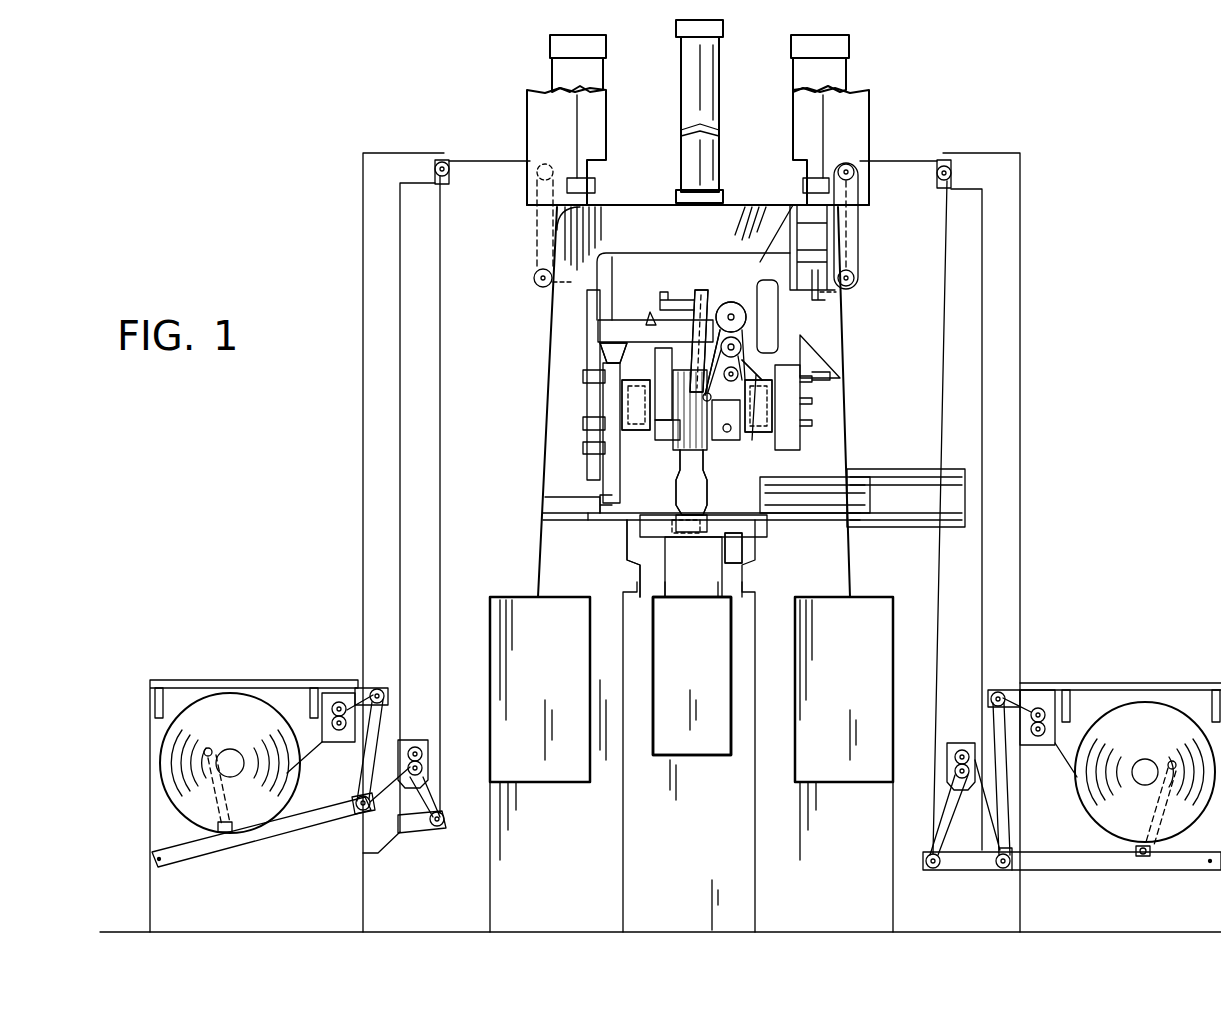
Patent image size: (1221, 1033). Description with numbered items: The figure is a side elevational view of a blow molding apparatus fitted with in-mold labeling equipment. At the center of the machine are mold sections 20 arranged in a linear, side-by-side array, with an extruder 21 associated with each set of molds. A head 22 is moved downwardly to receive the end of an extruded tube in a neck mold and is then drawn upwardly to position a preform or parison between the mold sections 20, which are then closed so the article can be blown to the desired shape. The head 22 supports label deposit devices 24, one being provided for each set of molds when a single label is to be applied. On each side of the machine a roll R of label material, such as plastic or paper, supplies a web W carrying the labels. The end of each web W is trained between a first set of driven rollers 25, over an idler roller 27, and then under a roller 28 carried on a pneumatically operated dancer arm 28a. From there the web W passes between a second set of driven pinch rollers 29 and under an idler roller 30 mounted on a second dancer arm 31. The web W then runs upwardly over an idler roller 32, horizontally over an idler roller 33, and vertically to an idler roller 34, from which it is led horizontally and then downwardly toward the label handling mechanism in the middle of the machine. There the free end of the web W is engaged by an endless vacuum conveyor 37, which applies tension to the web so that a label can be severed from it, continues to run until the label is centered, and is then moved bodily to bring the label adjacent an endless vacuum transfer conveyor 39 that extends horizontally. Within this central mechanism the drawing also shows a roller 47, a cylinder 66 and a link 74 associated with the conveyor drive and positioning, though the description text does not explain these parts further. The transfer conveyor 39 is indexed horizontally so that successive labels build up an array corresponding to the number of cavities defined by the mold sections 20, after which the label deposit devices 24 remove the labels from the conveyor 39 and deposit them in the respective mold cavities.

The mold sections 20 is at (640, 498).
The extruder 21 is at (710, 745).
The head 22 is at (675, 452).
The label deposit devices 24 is at (640, 340).
The first set of driven rollers 25 is at (335, 703).
The idler roller 27 is at (380, 690).
The roller 28 is at (358, 797).
The dancer arm 28a is at (292, 822).
The second set of driven pinch rollers 29 is at (422, 765).
The idler roller 30 is at (440, 828).
The dancer arm 31 is at (418, 831).
The idler roller 32 is at (443, 160).
The idler roller 33 is at (548, 165).
The idler roller 34 is at (540, 287).
The endless vacuum conveyor 37 is at (800, 362).
The endless vacuum transfer conveyor 39 is at (630, 394).
The roller 47 is at (724, 303).
The cylinder 66 is at (700, 355).
The link 74 is at (760, 375).
The roll R is at (219, 715).
The web W is at (440, 464).